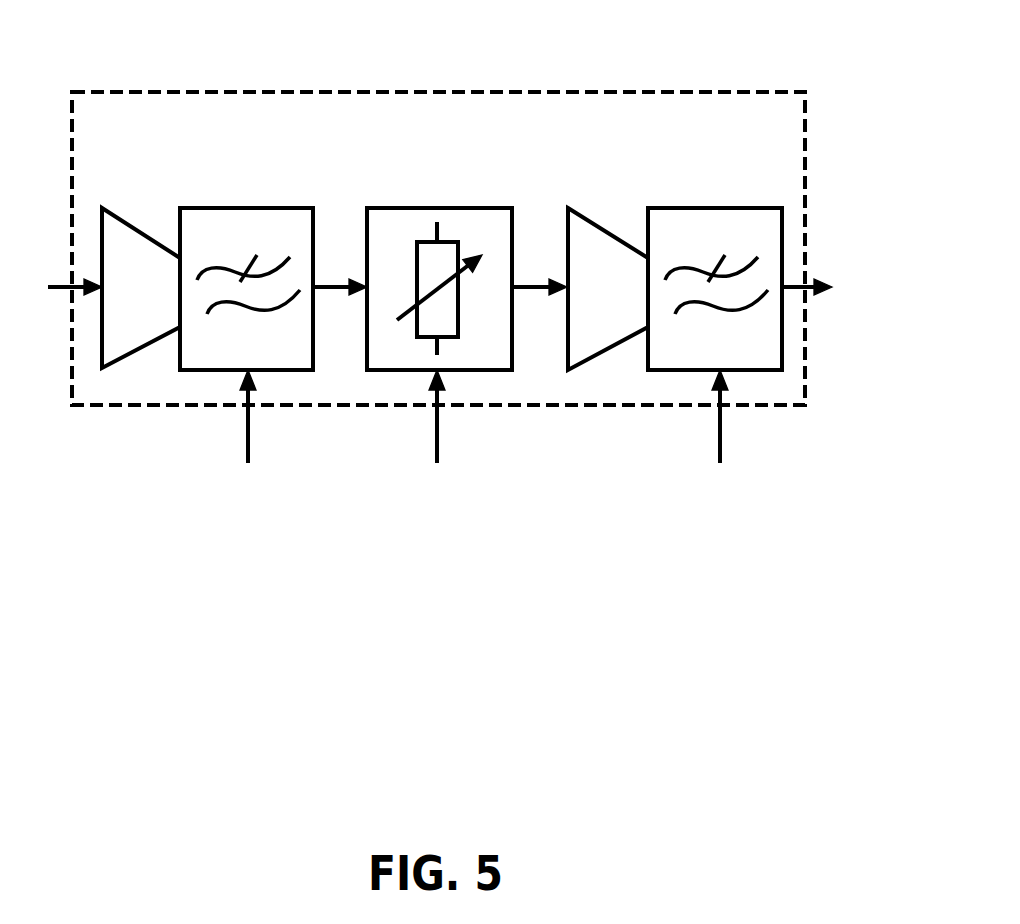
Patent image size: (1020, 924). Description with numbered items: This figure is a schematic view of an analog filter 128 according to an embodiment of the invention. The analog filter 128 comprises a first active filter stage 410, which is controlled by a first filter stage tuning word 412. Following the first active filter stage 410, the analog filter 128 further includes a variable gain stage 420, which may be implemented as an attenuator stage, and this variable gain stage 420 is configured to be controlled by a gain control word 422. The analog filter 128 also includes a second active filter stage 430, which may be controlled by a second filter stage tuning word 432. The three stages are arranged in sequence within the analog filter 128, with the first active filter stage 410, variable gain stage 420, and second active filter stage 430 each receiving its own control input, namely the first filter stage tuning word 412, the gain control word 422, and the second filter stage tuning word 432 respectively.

The analog filter 128 is at (713, 92).
The first active filter stage 410 is at (178, 208).
The first filter stage tuning word 412 is at (248, 438).
The variable gain stage 420 is at (437, 208).
The gain control word 422 is at (437, 440).
The second active filter stage 430 is at (648, 208).
The second filter stage tuning word 432 is at (720, 418).